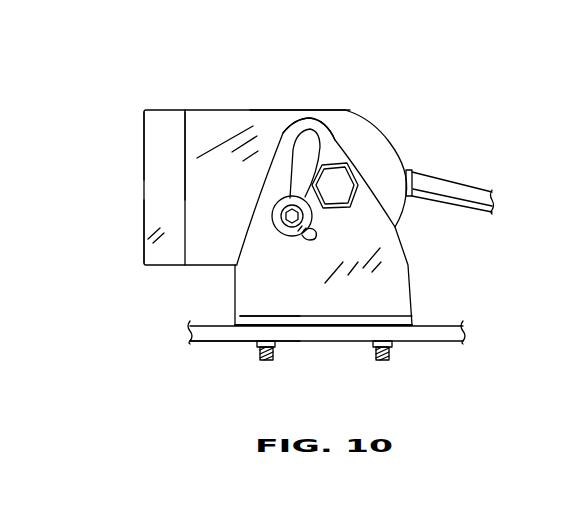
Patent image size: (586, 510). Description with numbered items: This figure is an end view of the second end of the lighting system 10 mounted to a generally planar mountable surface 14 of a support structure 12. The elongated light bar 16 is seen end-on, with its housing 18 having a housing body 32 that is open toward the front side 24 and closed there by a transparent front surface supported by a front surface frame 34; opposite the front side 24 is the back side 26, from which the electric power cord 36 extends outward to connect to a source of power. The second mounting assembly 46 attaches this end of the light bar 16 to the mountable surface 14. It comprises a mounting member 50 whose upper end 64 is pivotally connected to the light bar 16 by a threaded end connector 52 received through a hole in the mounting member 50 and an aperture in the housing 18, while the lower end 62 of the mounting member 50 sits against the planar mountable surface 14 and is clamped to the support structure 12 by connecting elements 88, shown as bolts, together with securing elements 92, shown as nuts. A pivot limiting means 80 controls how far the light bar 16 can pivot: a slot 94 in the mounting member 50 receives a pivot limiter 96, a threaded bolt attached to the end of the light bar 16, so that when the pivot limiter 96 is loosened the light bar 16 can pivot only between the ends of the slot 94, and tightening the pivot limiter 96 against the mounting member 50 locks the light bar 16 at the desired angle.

The lighting system 10 is at (480, 71).
The support structure 12 is at (210, 335).
The mountable surface 14 is at (448, 318).
The elongated light bar 16 is at (160, 172).
The housing 18 is at (302, 104).
The front side 24 is at (142, 102).
The back side 26 is at (412, 136).
The housing body 32 is at (207, 112).
The front surface frame 34 is at (147, 215).
The electric power cord 36 is at (452, 188).
The second mounting assembly 46 is at (424, 256).
The mounting member 50 is at (312, 305).
The end connector 52 is at (337, 182).
The lower end 62 is at (225, 318).
The upper end 64 is at (278, 120).
The pivot limiting means 80 is at (258, 204).
The connecting element 88 is at (392, 352).
The securing element 92 is at (254, 344).
The slot 94 is at (287, 168).
The pivot limiter 96 is at (283, 226).